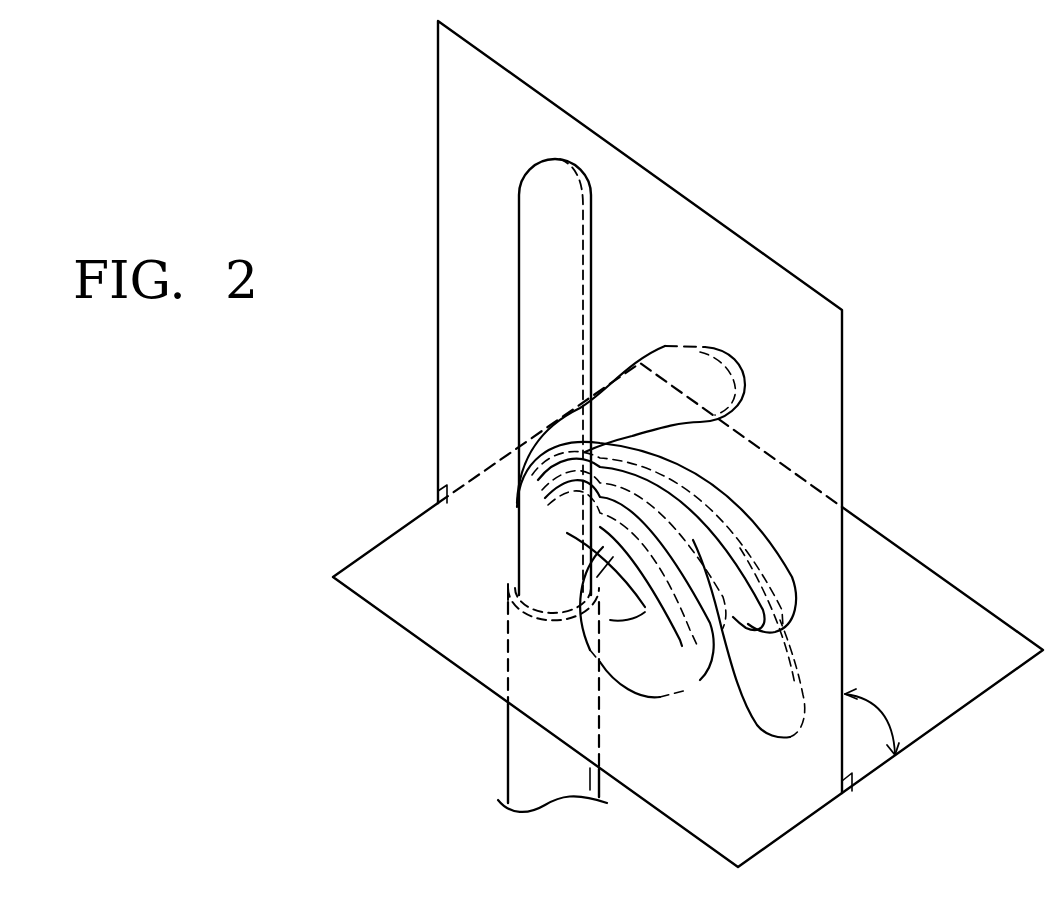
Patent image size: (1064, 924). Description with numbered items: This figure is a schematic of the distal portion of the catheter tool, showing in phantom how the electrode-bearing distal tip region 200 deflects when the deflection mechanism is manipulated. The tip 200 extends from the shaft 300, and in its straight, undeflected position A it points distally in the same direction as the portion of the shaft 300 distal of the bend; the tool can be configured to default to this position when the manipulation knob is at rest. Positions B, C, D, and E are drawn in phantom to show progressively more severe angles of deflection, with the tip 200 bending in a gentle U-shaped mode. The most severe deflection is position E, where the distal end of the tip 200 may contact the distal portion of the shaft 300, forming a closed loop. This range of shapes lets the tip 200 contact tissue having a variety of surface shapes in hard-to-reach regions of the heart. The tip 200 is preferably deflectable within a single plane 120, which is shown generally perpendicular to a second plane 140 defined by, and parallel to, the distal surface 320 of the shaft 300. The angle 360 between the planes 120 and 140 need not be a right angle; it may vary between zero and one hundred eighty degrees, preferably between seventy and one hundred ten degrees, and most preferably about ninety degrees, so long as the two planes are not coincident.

The plane 120 is at (520, 149).
The plane 140 is at (732, 787).
The distal tip region 200 is at (523, 321).
The shaft 300 is at (527, 752).
The distal surface 320 is at (510, 592).
The angle between planes 360 is at (883, 713).
The straight undeflected position A is at (559, 214).
The deflected position B is at (715, 392).
The deflected position C is at (793, 577).
The deflected position D is at (770, 701).
The most severe deflection position E is at (672, 679).